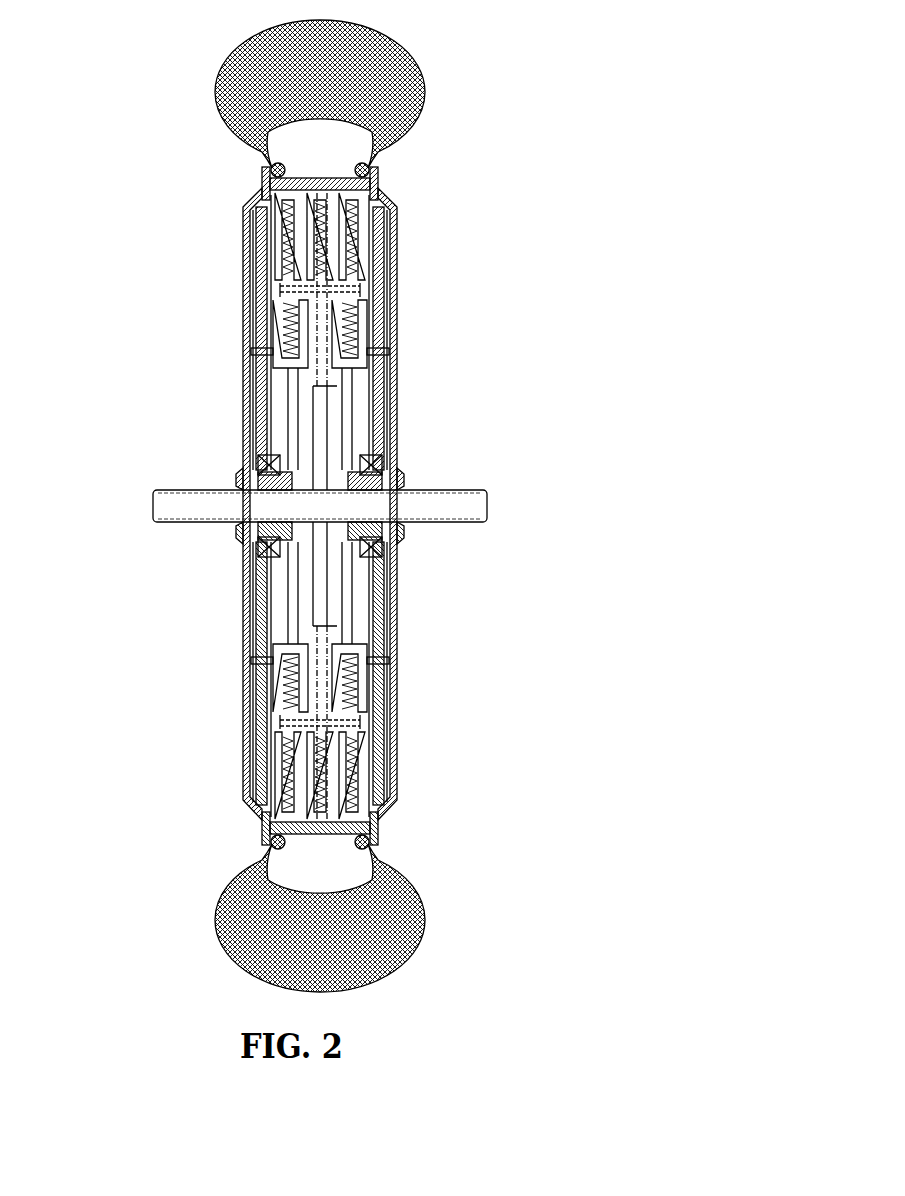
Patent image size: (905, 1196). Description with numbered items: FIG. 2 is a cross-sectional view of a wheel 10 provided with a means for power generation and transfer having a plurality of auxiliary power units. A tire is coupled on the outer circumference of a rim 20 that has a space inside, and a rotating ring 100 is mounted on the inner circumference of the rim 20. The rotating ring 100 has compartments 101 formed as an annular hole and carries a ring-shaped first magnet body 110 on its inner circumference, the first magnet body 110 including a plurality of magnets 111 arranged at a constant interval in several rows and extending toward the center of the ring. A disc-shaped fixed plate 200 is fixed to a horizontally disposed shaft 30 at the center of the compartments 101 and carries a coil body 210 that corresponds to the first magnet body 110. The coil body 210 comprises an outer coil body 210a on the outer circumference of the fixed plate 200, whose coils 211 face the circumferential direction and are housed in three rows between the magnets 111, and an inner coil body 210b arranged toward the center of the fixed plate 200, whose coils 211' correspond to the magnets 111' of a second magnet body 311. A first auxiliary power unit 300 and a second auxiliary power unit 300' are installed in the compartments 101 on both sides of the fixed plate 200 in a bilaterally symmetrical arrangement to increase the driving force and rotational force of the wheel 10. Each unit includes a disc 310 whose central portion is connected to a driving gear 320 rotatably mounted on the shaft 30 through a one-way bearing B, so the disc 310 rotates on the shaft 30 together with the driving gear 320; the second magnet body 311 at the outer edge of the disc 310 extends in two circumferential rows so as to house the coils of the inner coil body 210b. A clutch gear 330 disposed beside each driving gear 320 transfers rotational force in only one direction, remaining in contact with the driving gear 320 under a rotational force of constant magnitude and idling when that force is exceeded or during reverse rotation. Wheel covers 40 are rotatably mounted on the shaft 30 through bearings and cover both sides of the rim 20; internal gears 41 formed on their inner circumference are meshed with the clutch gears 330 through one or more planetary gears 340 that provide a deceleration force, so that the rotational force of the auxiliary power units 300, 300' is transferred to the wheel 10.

The wheel 10 is at (420, 77).
The rim 20 is at (333, 175).
The shaft 30 is at (165, 502).
The wheel cover 40 is at (245, 283).
The internal gear 41 is at (260, 238).
The rotating ring 100 is at (317, 177).
The compartment 101 is at (260, 460).
The first magnet body 110 is at (397, 793).
The magnet 111 is at (368, 673).
The magnet 111' is at (379, 679).
The fixed plate 200 is at (325, 443).
The coil body 210 is at (362, 722).
The outer coil body 210a is at (287, 777).
The inner coil body 210b is at (287, 680).
The coil 211 is at (242, 779).
The coil 211' is at (245, 680).
The first auxiliary power unit 300 is at (227, 304).
The second auxiliary power unit 300' is at (413, 385).
The disc 310 is at (253, 380).
The second magnet body 311 is at (390, 663).
The driving gear 320 is at (403, 477).
The clutch gear 330 is at (240, 452).
The planetary gear 340 is at (262, 306).
The one-way bearing B is at (268, 493).